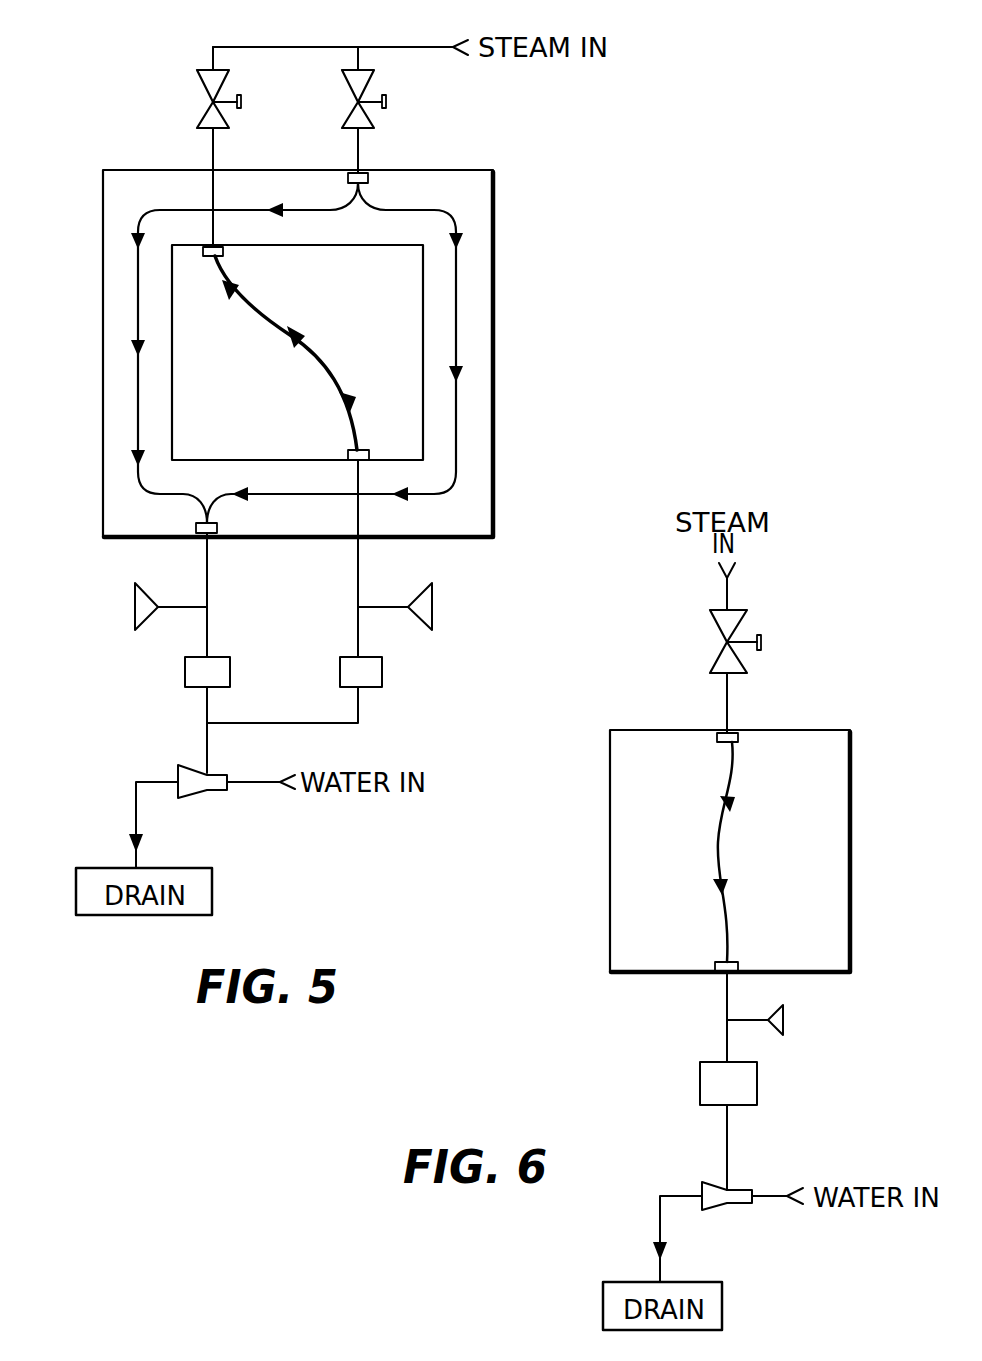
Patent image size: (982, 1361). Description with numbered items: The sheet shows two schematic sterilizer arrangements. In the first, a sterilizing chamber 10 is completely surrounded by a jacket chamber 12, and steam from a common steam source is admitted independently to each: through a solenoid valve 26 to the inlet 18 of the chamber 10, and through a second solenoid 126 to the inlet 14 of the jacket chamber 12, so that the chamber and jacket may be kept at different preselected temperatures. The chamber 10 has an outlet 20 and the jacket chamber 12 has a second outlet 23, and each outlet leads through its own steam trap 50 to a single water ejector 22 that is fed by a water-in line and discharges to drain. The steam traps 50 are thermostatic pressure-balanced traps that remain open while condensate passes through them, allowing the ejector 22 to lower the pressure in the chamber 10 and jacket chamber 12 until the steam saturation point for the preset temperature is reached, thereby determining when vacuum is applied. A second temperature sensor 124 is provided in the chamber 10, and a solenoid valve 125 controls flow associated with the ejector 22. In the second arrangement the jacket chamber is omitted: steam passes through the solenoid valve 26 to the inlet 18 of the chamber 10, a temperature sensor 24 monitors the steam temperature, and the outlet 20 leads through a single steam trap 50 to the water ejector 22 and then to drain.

In FIG. 5, the sterilizing chamber 10 is at (410, 292).
In FIG. 6, the sterilizing chamber 10 is at (610, 860).
In FIG. 5, the jacket chamber 12 is at (495, 392).
In FIG. 5, the inlet 14 is at (366, 172).
In FIG. 5, the inlet 18 is at (223, 252).
In FIG. 6, the inlet 18 is at (718, 742).
In FIG. 6, the outlet 20 is at (740, 962).
In FIG. 5, the water ejector 22 is at (210, 798).
In FIG. 6, the water ejector 22 is at (733, 1210).
In FIG. 5, the second outlet 23 is at (217, 531).
In FIG. 6, the temperature sensor 24 is at (783, 1020).
In FIG. 5, the solenoid valve 26 is at (207, 104).
In FIG. 6, the solenoid valve 26 is at (716, 662).
In FIG. 5, the steam trap 50 is at (230, 672).
In FIG. 6, the steam trap 50 is at (757, 1092).
In FIG. 5, the second temperature sensor 124 is at (132, 608).
In FIG. 5, the solenoid valve 125 is at (432, 610).
In FIG. 5, the second solenoid 126 is at (352, 104).